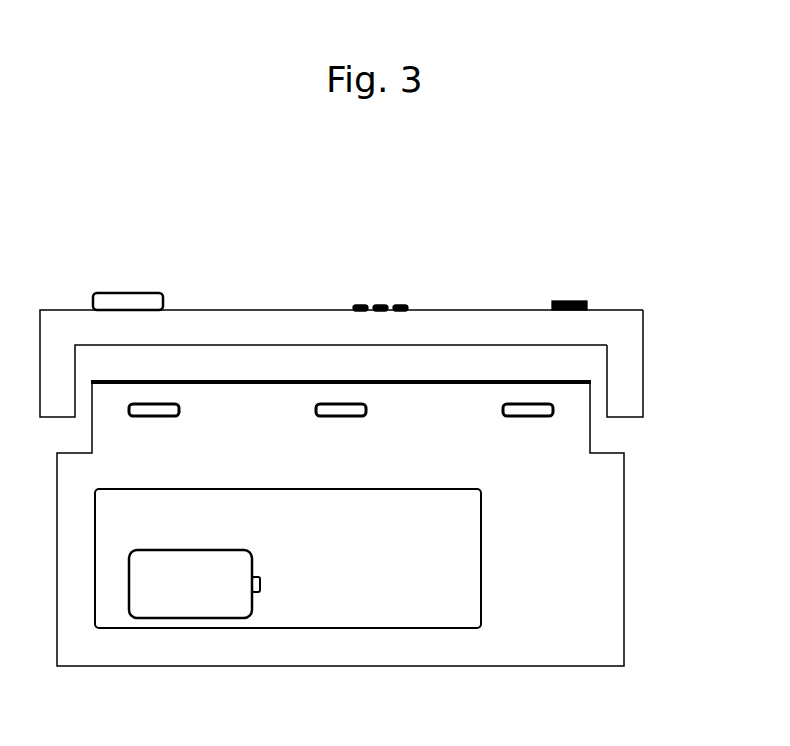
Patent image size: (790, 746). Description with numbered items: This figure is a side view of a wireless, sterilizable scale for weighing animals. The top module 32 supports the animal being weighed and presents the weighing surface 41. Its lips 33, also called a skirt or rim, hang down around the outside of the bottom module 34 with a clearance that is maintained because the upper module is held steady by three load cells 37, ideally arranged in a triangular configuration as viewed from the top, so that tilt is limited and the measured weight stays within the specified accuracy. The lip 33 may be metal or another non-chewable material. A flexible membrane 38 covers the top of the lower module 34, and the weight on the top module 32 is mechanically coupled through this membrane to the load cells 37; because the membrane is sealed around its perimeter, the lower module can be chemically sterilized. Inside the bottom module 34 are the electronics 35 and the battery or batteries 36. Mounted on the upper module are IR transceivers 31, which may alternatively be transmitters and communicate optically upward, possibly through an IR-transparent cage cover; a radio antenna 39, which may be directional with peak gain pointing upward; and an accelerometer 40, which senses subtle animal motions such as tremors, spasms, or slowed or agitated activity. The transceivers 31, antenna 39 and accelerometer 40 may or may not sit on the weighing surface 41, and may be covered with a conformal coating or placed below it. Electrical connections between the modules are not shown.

The IR transceivers 31 is at (108, 302).
The top module 32 is at (289, 327).
The lip 33 is at (625, 380).
The bottom module 34 is at (600, 523).
The electronics 35 is at (388, 590).
The battery 36 is at (204, 608).
The load cells 37 is at (340, 409).
The flexible membrane 38 is at (448, 378).
The radio antenna 39 is at (380, 304).
The accelerometer 40 is at (573, 298).
The weighing surface 41 is at (233, 308).